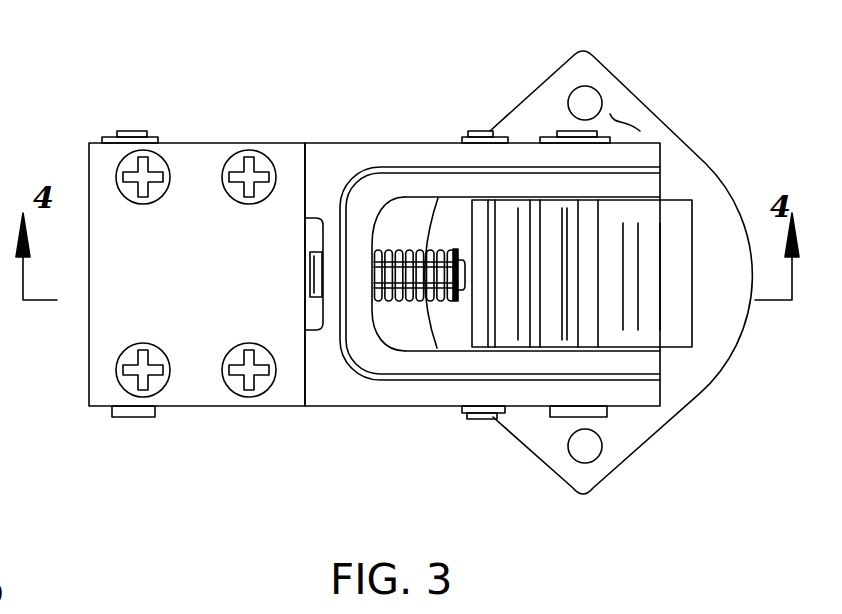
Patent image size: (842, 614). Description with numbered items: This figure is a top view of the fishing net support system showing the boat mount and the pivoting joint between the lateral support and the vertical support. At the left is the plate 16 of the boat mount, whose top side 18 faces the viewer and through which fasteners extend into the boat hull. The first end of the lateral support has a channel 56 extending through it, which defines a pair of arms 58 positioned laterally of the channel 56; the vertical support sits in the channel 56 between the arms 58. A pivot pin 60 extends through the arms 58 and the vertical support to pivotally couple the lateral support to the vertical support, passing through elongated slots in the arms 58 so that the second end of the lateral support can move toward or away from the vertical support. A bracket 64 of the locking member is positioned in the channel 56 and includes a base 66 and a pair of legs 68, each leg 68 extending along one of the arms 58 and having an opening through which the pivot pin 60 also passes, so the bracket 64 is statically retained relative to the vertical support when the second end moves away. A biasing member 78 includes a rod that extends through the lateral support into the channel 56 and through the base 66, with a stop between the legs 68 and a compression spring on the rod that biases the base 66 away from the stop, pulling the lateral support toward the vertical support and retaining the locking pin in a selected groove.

The plate 16 is at (610, 60).
The top side 18 is at (625, 118).
The channel 56 is at (400, 200).
The arms 58 is at (650, 155).
The pivot pin 60 is at (567, 413).
The bracket 64 is at (372, 348).
The base 66 is at (357, 263).
The legs 68 is at (447, 185).
The biasing member 78 is at (398, 343).